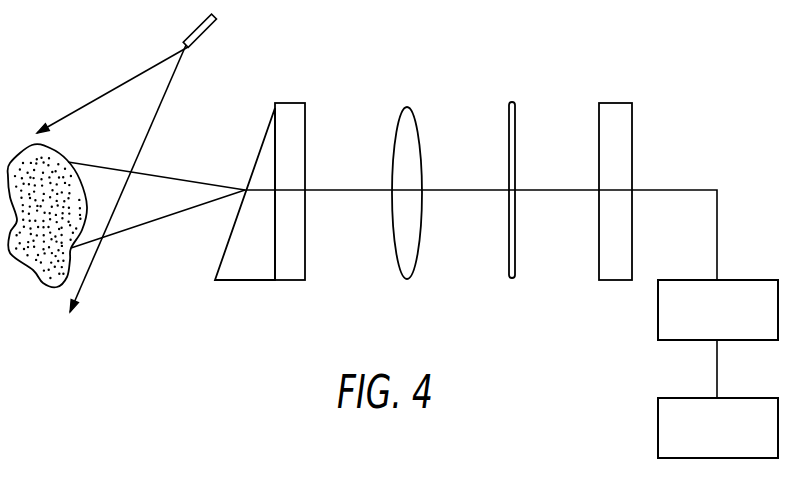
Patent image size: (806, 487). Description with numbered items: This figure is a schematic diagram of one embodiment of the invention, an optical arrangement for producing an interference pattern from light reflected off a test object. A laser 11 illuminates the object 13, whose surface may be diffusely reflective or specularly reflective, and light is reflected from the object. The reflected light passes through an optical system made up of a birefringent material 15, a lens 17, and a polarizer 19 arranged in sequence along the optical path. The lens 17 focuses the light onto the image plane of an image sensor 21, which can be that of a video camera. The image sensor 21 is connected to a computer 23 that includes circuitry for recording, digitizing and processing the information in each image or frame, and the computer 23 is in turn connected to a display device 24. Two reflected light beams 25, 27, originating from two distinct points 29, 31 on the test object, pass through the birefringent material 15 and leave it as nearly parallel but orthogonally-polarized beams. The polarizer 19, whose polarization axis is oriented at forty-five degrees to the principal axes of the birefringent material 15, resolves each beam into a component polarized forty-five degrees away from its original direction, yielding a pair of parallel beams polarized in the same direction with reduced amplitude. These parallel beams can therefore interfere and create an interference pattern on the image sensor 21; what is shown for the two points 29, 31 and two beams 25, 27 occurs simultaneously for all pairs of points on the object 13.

The laser 11 is at (212, 21).
The object 13 is at (37, 282).
The birefringent material 15 is at (257, 272).
The lens 17 is at (407, 280).
The polarizer 19 is at (512, 278).
The image sensor 21 is at (618, 280).
The computer 23 is at (729, 323).
The display device 24 is at (729, 441).
The reflected light beam 25 is at (186, 190).
The reflected light beam 27 is at (167, 218).
The point on test object 29 is at (68, 162).
The point on test object 31 is at (72, 250).